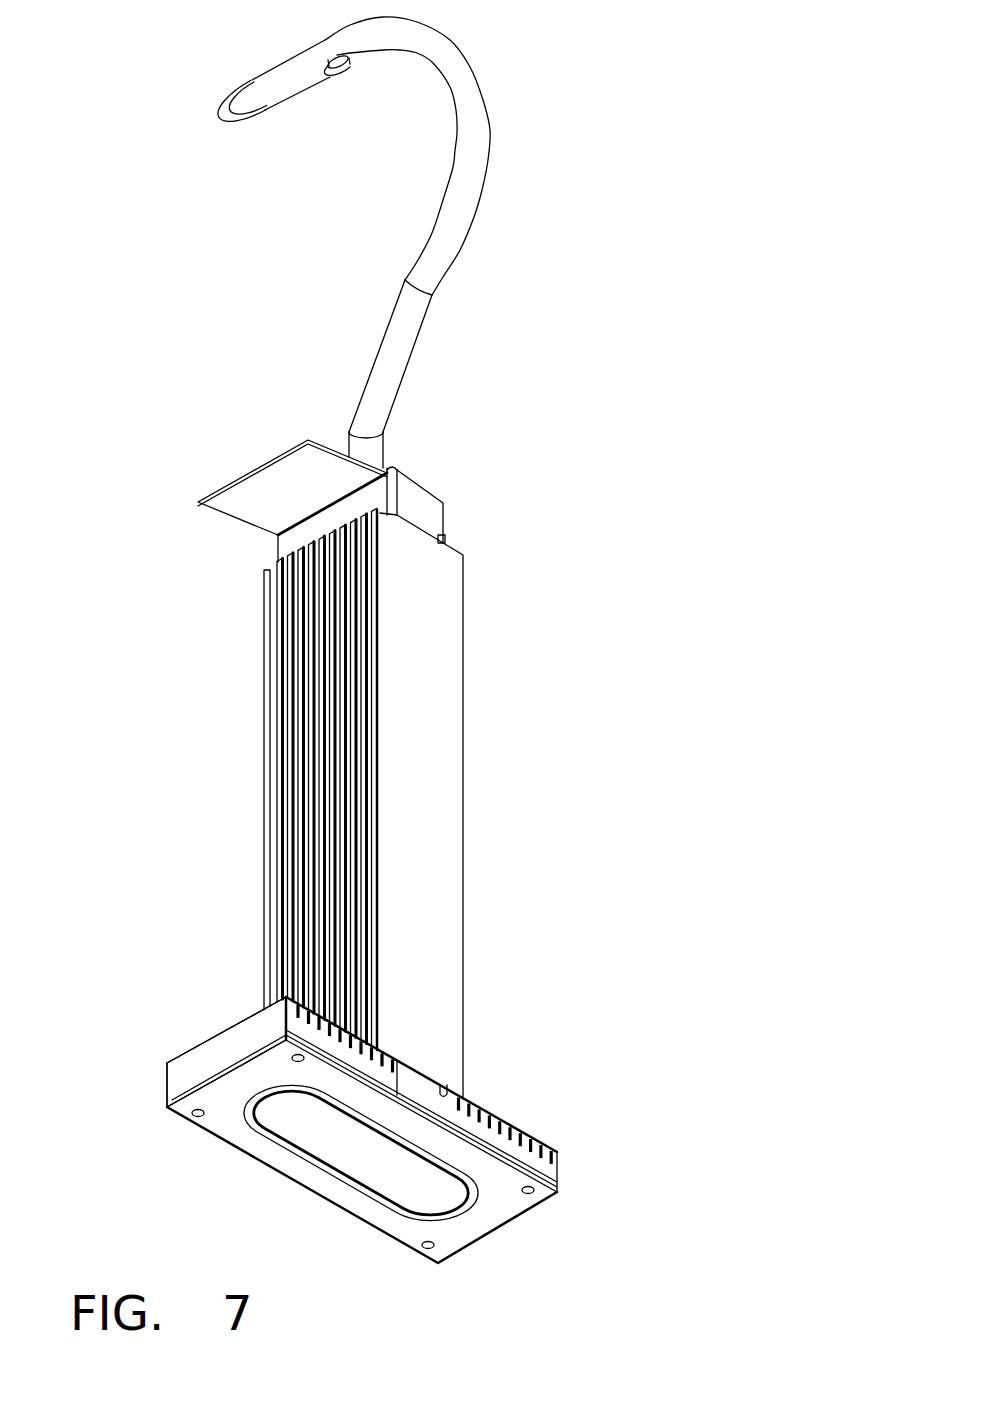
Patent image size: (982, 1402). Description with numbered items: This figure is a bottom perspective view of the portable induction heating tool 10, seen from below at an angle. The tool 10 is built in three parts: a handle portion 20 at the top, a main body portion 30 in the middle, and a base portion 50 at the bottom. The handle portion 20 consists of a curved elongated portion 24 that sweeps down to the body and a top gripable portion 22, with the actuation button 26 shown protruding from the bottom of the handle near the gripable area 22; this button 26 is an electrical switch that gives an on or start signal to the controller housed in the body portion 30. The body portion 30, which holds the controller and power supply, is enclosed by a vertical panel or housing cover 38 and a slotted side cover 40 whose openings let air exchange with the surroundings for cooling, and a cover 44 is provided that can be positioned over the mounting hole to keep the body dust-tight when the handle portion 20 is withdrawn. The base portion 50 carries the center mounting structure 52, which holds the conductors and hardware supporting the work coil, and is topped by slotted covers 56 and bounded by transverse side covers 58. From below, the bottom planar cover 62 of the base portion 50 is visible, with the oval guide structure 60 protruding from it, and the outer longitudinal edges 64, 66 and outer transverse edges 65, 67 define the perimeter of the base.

The induction heating tool 10 is at (692, 188).
The handle portion 20 is at (308, 325).
The top gripable portion 22 is at (276, 64).
The curved elongated portion 24 is at (492, 114).
The actuation button 26 is at (336, 78).
The main body portion 30 is at (538, 562).
The vertical panel or housing cover 38 is at (392, 630).
The side cover 40 is at (295, 657).
The cover 44 is at (265, 500).
The base portion 50 is at (674, 1032).
The center mounting structure 52 is at (417, 1082).
The covers 56 is at (513, 1122).
The transverse side covers 58 is at (233, 1038).
The oval guide structure 60 is at (440, 1217).
The bottom planar cover 62 is at (338, 1160).
The outer longitudinal edge 64 is at (562, 1161).
The outer transverse edge 65 is at (203, 1081).
The outer longitudinal edge 66 is at (224, 1140).
The outer transverse edge 67 is at (515, 1222).